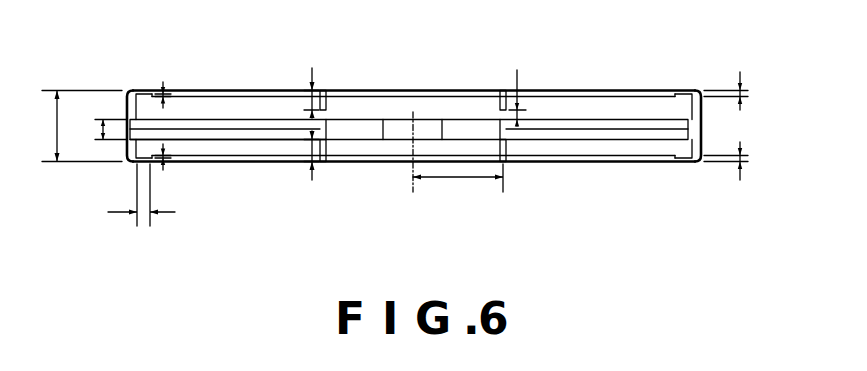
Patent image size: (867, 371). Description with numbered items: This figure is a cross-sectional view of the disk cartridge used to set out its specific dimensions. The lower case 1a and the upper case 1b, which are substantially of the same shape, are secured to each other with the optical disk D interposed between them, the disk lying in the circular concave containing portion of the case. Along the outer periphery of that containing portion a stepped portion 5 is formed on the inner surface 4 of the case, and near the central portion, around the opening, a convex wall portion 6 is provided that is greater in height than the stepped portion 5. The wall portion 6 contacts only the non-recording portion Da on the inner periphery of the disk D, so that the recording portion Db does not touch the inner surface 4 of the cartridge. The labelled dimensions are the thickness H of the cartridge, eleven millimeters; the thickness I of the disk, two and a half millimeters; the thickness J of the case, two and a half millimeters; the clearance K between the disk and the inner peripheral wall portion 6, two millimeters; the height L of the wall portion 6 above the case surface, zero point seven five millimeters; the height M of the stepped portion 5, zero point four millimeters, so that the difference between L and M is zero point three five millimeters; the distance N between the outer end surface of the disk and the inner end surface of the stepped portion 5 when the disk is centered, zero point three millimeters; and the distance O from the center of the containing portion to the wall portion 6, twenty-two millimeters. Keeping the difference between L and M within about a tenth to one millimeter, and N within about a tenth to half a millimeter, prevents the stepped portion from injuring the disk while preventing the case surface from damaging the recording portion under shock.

The lower case 1a is at (228, 90).
The upper case 1b is at (235, 163).
The inner surface 4 is at (297, 143).
The stepped portion 5 is at (143, 96).
The wall portion 6 is at (328, 102).
The optical disk D is at (552, 110).
The non-recording portion Da is at (472, 126).
The recording portion Db is at (615, 121).
The thickness of the cartridge H is at (76, 126).
The thickness of the disk I is at (89, 137).
The thickness of the case J is at (729, 126).
The clearance K is at (522, 94).
The height of the wall portion L is at (316, 129).
The height of the stepped portion M is at (173, 128).
The distance N is at (139, 195).
The distance O is at (458, 185).